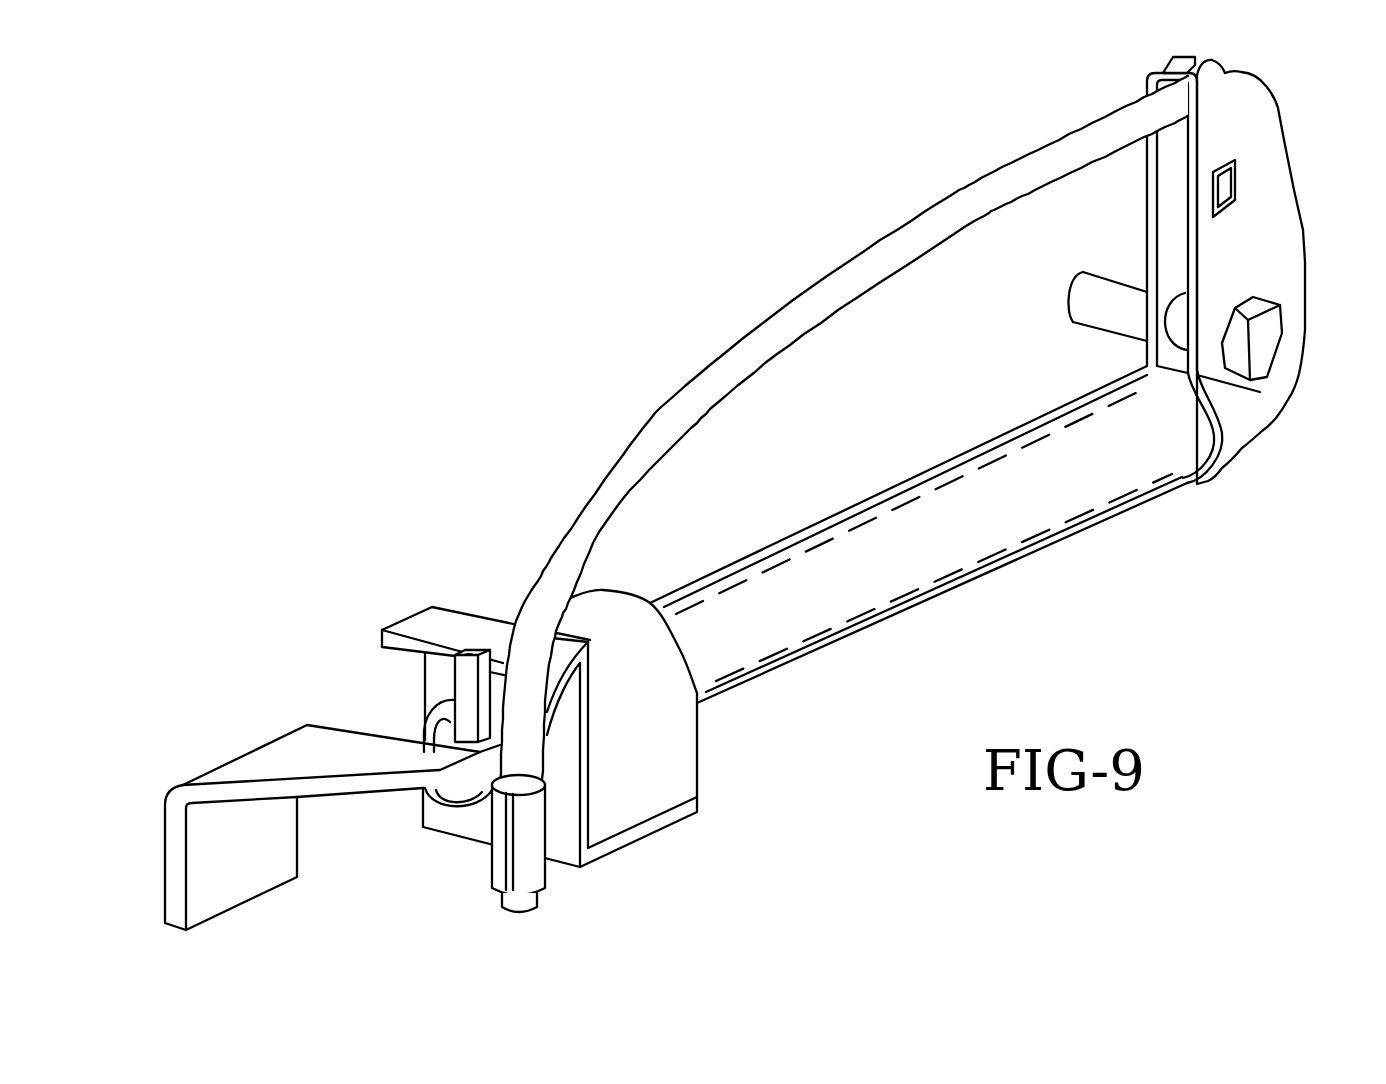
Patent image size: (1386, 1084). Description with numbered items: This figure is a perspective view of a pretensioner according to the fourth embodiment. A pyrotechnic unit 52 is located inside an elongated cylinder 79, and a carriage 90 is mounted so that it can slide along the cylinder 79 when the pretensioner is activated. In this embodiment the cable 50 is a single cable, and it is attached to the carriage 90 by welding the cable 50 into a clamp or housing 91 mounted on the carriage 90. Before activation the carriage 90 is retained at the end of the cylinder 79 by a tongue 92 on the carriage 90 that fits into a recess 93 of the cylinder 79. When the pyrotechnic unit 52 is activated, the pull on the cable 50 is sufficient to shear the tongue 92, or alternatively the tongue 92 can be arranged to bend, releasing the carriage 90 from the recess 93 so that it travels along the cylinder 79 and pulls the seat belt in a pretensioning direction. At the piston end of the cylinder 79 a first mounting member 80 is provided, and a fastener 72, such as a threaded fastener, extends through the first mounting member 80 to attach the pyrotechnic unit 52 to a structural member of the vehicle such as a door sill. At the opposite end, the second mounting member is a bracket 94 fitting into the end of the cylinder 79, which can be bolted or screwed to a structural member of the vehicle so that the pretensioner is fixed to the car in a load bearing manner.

The cable 50 is at (741, 360).
The pyrotechnic unit 52 is at (813, 635).
The fastener 72 is at (1262, 346).
The cylinder 79 is at (888, 590).
The first mounting member 80 is at (1268, 176).
The carriage 90 is at (633, 768).
The clamp or housing 91 is at (500, 860).
The tongue 92 is at (467, 688).
The recess 93 is at (420, 740).
The bracket 94 is at (278, 762).